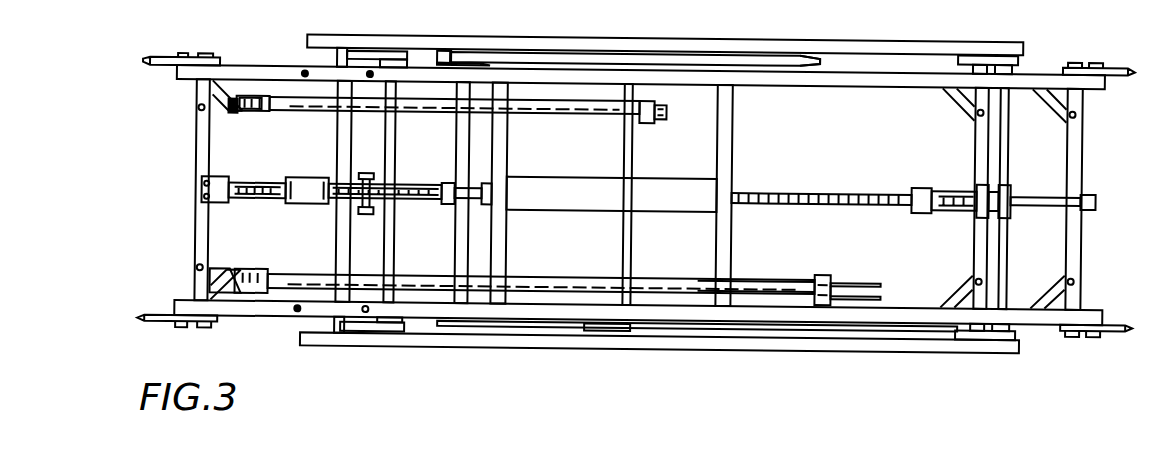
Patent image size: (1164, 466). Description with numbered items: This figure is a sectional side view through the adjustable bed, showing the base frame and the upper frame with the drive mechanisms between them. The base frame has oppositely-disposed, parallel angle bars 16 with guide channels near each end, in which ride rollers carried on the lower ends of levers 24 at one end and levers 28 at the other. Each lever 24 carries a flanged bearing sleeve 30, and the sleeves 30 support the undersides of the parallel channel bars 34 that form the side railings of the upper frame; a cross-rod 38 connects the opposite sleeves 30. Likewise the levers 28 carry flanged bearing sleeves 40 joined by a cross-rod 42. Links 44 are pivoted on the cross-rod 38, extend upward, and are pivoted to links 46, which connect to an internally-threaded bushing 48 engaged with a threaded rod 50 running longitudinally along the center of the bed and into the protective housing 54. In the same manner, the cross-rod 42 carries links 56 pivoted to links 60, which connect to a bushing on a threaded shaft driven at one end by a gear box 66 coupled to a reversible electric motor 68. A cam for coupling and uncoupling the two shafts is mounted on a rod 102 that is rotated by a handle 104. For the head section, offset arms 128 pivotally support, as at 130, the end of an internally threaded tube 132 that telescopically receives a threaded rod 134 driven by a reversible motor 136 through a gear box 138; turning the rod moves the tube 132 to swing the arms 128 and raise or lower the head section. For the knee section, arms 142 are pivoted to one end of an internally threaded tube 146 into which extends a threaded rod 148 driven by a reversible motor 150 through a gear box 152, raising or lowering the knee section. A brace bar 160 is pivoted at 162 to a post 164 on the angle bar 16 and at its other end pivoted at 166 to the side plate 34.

The angle bar 16 is at (735, 37).
The lever 24 is at (995, 49).
The lever 28 is at (370, 47).
The bearing sleeve 30 is at (1010, 61).
The channel bar 34 is at (850, 73).
The cross-rod 38 is at (1008, 259).
The flanged bearing sleeve 40 is at (405, 56).
The cross-rod 42 is at (388, 136).
The link 44 is at (1015, 187).
The link 46 is at (952, 196).
The internally-threaded bushing 48 is at (927, 157).
The threaded rod 50 is at (820, 185).
The protective housing 54 is at (592, 178).
The link 56 is at (402, 185).
The link 60 is at (325, 170).
The gear box 66 is at (223, 180).
The reversible electric motor 68 is at (272, 199).
The rod 102 is at (632, 246).
The handle 104 is at (603, 326).
The offset arm 128 is at (835, 278).
The pivot 130 is at (822, 268).
The tube 132 is at (758, 276).
The threaded rod 134 is at (258, 275).
The reversible motor 136 is at (245, 267).
The gear box 138 is at (225, 267).
The arm 142 is at (650, 115).
The internally threaded tube 146 is at (545, 104).
The threaded rod 148 is at (248, 96).
The reversible motor 150 is at (263, 112).
The gear box 152 is at (235, 116).
The brace bar 160 is at (622, 51).
The pivot 162 is at (450, 61).
The post 164 is at (447, 47).
The pivot 166 is at (818, 53).